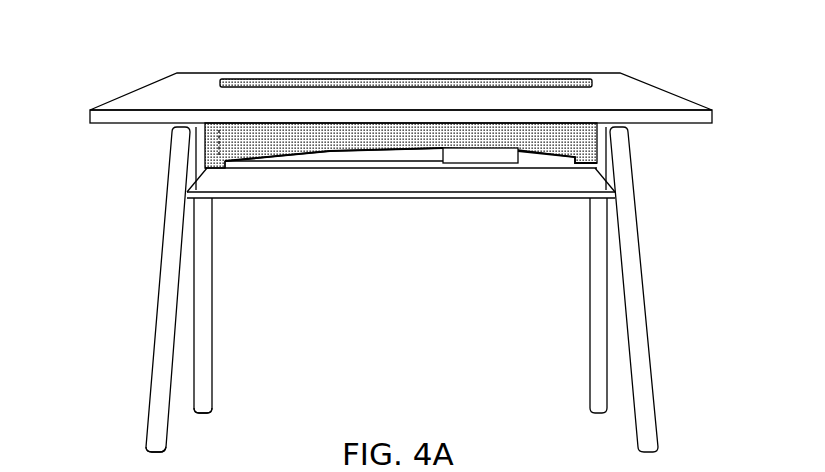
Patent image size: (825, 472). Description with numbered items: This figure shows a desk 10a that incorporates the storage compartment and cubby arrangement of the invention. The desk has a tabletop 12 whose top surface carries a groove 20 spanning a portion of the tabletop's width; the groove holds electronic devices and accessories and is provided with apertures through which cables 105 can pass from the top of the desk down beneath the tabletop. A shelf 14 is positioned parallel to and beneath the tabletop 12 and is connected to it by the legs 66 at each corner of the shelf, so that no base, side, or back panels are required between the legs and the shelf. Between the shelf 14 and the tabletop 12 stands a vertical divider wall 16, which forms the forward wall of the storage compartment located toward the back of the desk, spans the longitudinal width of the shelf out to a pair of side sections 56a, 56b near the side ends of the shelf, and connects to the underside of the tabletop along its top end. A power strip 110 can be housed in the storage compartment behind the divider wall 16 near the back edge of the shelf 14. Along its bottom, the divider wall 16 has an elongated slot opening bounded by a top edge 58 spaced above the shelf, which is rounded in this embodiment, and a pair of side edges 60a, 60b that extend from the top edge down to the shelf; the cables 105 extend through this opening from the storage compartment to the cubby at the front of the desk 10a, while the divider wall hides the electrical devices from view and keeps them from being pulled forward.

The desk 10a is at (124, 74).
The tabletop 12 is at (633, 103).
The shelf 14 is at (610, 195).
The divider wall 16 is at (233, 132).
The groove 20 is at (572, 82).
The side section 56a is at (205, 140).
The side section 56b is at (597, 143).
The top edge 58 is at (400, 147).
The side edge 60a is at (222, 170).
The side edge 60b is at (592, 167).
The legs 66 is at (203, 377).
The cables 105 is at (616, 178).
The power strip 110 is at (477, 152).